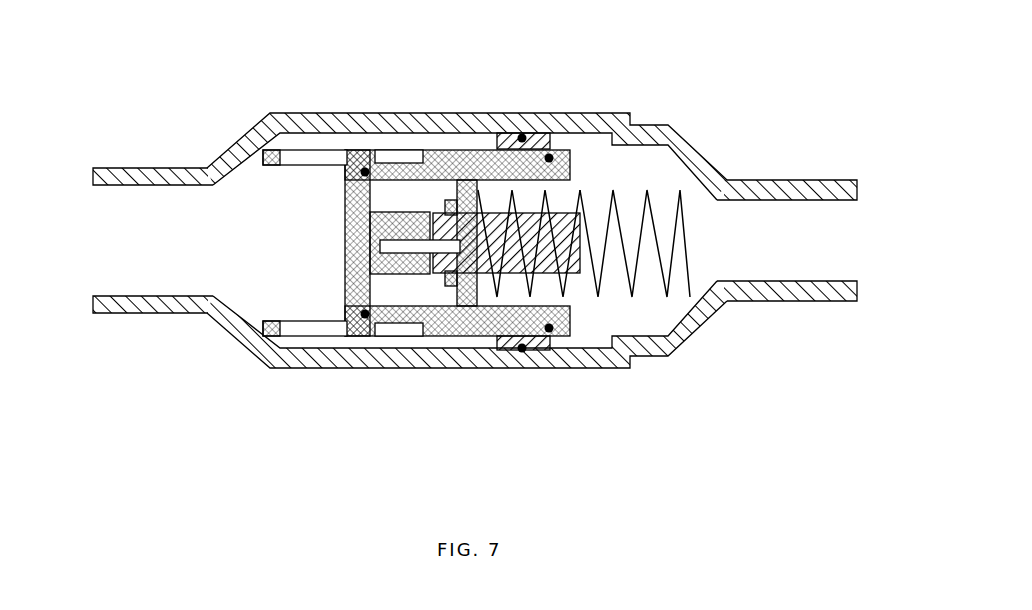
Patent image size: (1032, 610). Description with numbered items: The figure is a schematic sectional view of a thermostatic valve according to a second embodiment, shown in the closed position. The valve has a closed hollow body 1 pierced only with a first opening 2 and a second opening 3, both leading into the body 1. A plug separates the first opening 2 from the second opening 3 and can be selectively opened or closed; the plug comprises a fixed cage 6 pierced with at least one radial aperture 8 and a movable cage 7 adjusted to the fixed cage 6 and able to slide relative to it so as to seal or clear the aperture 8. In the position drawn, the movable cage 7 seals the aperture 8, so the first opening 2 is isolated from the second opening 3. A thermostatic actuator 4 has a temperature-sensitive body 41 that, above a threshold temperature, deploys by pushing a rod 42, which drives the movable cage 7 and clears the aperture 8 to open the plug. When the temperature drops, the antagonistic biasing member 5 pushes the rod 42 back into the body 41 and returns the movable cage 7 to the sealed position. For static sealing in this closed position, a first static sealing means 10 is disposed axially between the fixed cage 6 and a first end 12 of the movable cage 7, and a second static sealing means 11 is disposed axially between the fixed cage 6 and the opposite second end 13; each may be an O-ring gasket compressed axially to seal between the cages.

The hollow body 1 is at (446, 219).
The first opening 2 is at (114, 240).
The second opening 3 is at (825, 240).
The thermostatic actuator 4 is at (631, 189).
The biasing member 5 is at (682, 208).
The fixed cage 6 is at (346, 203).
The movable cage 7 is at (457, 202).
The radial aperture 8 is at (359, 181).
The first static sealing means 10 is at (303, 243).
The second static sealing means 11 is at (605, 181).
The first end 12 is at (303, 243).
The second end 13 is at (587, 217).
The body 41 is at (513, 303).
The rod 42 is at (363, 333).